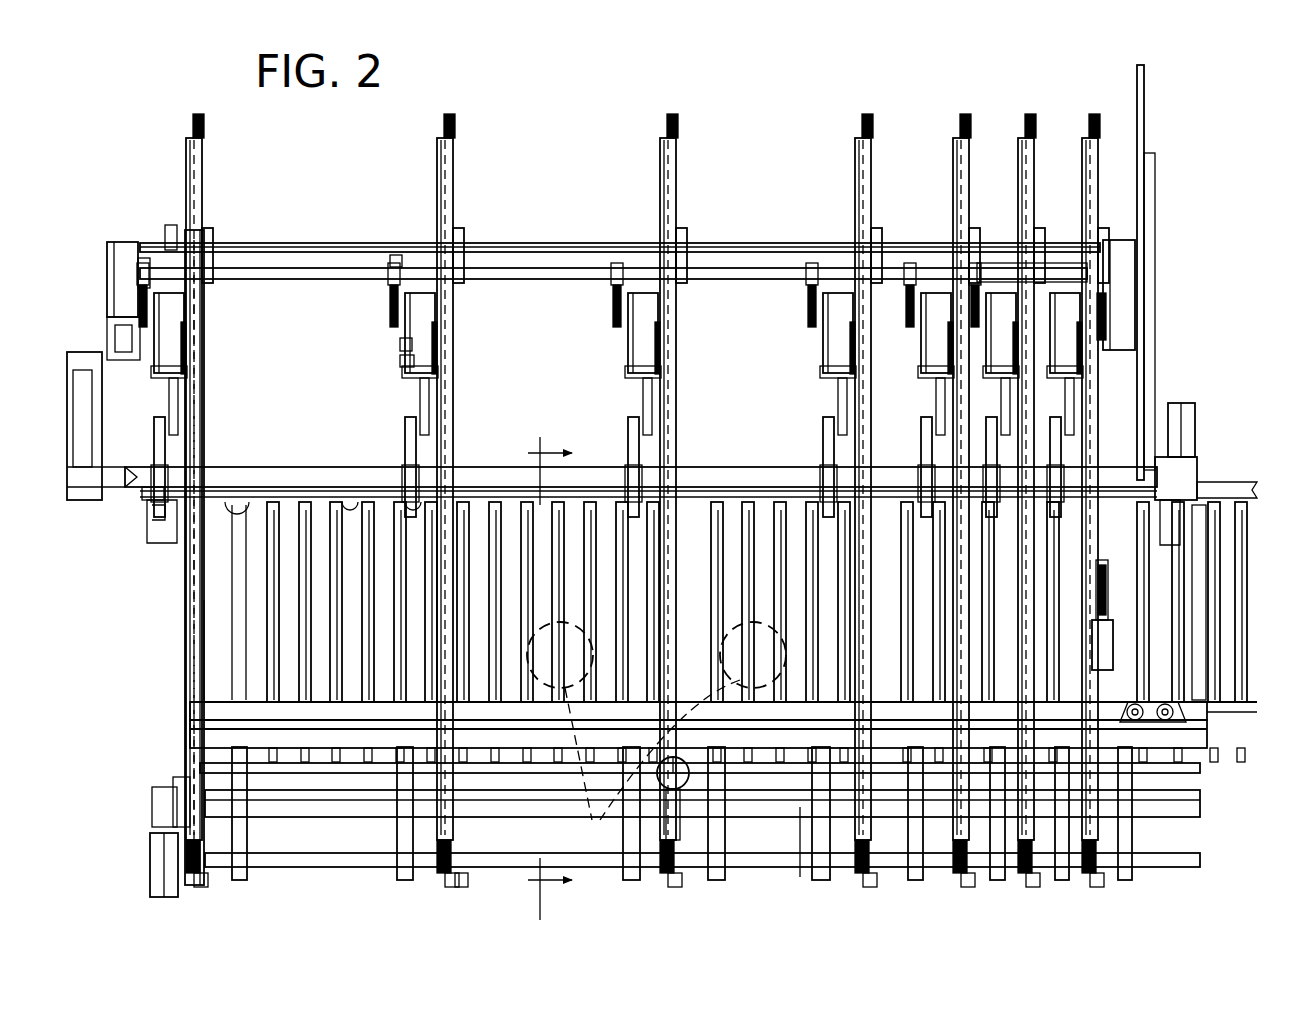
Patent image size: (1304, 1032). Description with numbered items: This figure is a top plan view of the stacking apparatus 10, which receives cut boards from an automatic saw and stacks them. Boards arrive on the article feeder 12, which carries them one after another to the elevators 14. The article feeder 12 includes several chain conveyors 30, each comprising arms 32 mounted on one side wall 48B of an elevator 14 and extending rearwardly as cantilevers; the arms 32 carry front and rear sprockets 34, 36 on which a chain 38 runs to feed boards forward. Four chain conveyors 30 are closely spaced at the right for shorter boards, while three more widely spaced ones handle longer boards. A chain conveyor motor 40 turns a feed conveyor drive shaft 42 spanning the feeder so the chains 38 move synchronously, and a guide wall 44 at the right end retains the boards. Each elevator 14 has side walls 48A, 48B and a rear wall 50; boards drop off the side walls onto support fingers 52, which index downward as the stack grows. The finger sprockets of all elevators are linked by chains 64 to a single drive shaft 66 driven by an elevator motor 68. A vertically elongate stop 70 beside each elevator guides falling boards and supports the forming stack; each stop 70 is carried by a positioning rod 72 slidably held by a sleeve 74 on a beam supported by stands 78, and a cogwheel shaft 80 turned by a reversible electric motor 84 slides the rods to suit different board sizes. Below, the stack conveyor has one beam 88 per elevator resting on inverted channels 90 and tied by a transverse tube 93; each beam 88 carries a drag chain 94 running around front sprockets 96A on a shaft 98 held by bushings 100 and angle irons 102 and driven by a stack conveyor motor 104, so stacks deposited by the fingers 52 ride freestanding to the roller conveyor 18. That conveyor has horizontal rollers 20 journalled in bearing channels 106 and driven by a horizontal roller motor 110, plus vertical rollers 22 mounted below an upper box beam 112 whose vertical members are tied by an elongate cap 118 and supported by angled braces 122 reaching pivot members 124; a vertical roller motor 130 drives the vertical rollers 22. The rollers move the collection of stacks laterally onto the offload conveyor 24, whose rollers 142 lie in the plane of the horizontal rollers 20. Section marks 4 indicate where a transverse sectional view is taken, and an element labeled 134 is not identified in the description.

The section line 4- 4 is at (546, 671).
The stacking apparatus 10 is at (778, 160).
The article feeder 12 is at (165, 215).
The elevators 14 is at (154, 398).
The roller conveyor 18 is at (188, 660).
The horizontal rollers 20 is at (368, 510).
The vertical rollers 22 is at (1168, 722).
The offload conveyor 24 is at (1243, 732).
The chain conveyors 30 is at (225, 142).
The arms 32 is at (200, 180).
The front sprockets 34 is at (200, 380).
The rear sprockets 36 is at (193, 118).
The chain 38 is at (200, 204).
The chain conveyor motor 40 is at (110, 246).
The feed conveyor drive shaft 42 is at (256, 250).
The guide wall 44 is at (1145, 115).
The side wall 48A is at (400, 345).
The side wall 48B is at (405, 362).
The rear wall 50 is at (398, 256).
The support fingers 52 is at (178, 425).
The chains 64 is at (142, 272).
The drive shaft 66 is at (468, 276).
The elevator motor 68 is at (1118, 292).
The stop 70 is at (154, 430).
The positioning rod 72 is at (162, 455).
The sleeve 74 is at (184, 472).
The stands 78 is at (72, 368).
The shaft 80 is at (803, 485).
The reversible electric motor 84 is at (1187, 432).
The beam 88 is at (455, 392).
The inverted channels 90 is at (152, 536).
The tube 93 is at (802, 815).
The drag chain 94 is at (680, 458).
The front sprockets 96A is at (196, 880).
The shaft 98 is at (367, 855).
The bushings 100 is at (548, 817).
The angle irons 102 is at (492, 905).
The stack conveyor motor 104 is at (156, 868).
The bearing channels 106 is at (242, 500).
The horizontal roller motor 110 is at (692, 772).
The upper box beam 112 is at (196, 720).
The elongate cap 118 is at (196, 740).
The angled braces 122 is at (248, 832).
The pivot members 124 is at (252, 880).
The vertical roller motor 130 is at (1114, 640).
The linkage 134 is at (656, 734).
The rollers 142 is at (1214, 565).